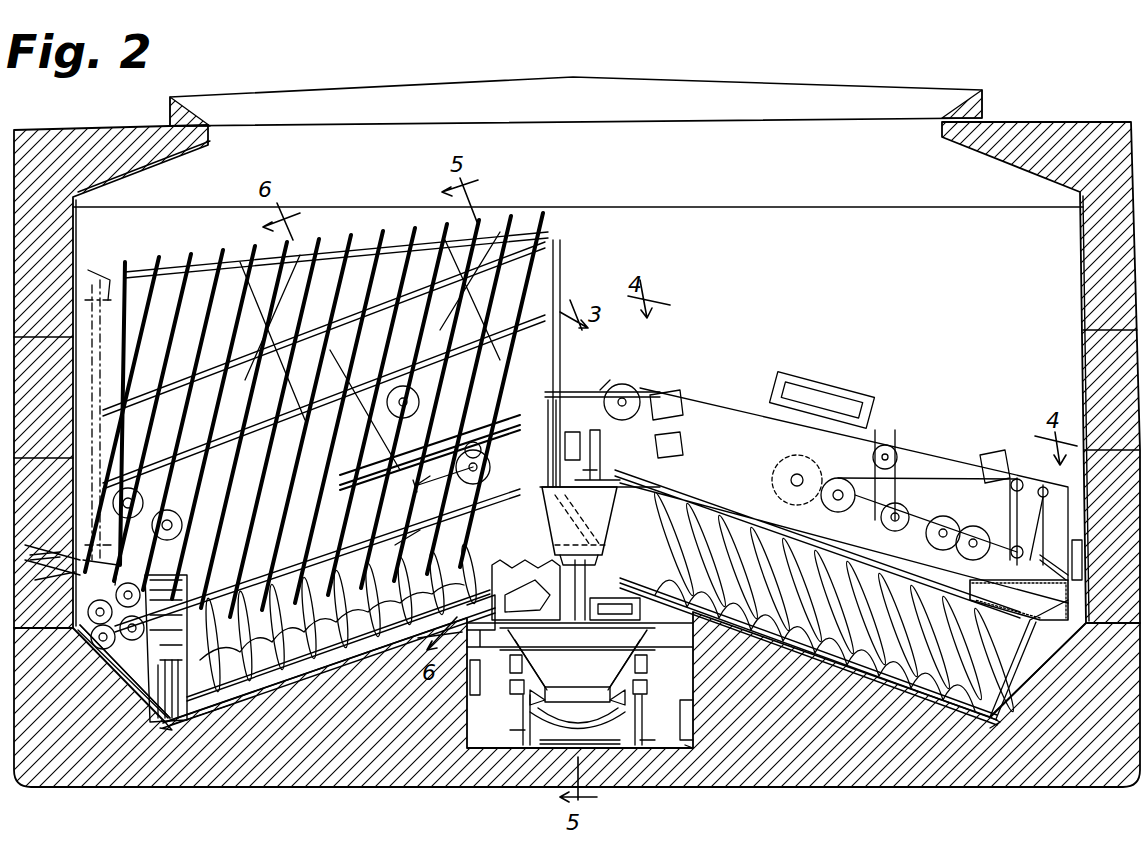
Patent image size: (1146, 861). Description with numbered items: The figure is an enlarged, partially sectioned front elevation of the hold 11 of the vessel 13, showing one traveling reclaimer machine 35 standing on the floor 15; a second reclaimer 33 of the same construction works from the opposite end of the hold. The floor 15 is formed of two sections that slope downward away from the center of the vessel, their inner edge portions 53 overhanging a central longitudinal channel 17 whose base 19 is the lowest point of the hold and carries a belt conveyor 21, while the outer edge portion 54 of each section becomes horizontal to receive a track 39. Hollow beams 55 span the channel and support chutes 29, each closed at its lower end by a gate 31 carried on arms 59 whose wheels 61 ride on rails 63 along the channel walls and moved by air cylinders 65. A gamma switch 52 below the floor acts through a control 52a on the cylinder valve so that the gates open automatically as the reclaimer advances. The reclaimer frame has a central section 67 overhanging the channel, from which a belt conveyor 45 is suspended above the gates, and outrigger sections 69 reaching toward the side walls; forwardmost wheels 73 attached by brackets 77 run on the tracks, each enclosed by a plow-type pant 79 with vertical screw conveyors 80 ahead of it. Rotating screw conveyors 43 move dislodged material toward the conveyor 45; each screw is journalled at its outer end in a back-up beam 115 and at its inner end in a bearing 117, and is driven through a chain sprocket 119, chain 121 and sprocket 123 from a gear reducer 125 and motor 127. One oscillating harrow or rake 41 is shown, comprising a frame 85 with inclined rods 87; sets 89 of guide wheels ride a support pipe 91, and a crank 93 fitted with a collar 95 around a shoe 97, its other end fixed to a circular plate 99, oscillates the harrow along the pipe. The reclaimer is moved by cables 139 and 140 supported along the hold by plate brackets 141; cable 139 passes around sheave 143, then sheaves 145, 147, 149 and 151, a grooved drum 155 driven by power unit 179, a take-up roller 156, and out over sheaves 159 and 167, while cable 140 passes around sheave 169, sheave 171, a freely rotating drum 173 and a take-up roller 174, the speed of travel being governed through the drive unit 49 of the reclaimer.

The hold 11 is at (723, 211).
The vessel 13 is at (1068, 125).
The floor 15 is at (818, 661).
The channel 17 is at (695, 703).
The base of the channel 19 is at (686, 748).
The conveyor 21 is at (605, 745).
The chutes 29 is at (580, 686).
The gate 31 is at (580, 700).
The traveling reclaimer machine 33 is at (586, 583).
The traveling reclaimer machine 35 is at (842, 381).
The tracks 39 is at (172, 728).
The oscillating harrows or rakes 41 is at (562, 247).
The rotating screw conveyors 43 is at (745, 640).
The belt conveyor 45 is at (612, 592).
The drive unit 49 is at (958, 462).
The gamma switches 52 is at (580, 621).
The control 52a is at (470, 688).
The inner edge portions 53 is at (535, 595).
The outer edge portion 54 is at (150, 660).
The hollow beams 55 is at (565, 640).
The arms 59 is at (610, 685).
The wheels 61 is at (648, 690).
The rails 63 is at (648, 725).
The air cylinders 65 is at (648, 664).
The central section 67 is at (560, 400).
The outrigger sections 69 is at (243, 520).
The forwardmost wheels 73 is at (160, 712).
The brackets 77 is at (200, 712).
The plow-type shield or pant 79 is at (188, 585).
The screw conveyors 80 is at (156, 682).
The frame 85 is at (300, 338).
The rods 87 is at (316, 422).
The sets of guide wheels 89 is at (133, 640).
The support pipe 91 is at (75, 640).
The crank 93 is at (440, 484).
The collar 95 is at (410, 540).
The shoe 97 is at (395, 480).
The circular plate 99 is at (475, 442).
The back-up beam 115 is at (1015, 633).
The bearing 117 is at (605, 515).
The chain sprocket 119 is at (598, 560).
The chain 121 is at (592, 472).
The sprocket 123 is at (600, 455).
The gear reducer 125 is at (665, 455).
The motor 127 is at (668, 395).
The cable 139 is at (612, 388).
The cable 140 is at (1076, 580).
The plate brackets 141 is at (72, 578).
The sheave 143 is at (102, 555).
The sheave 145 is at (170, 518).
The sheave 147 is at (143, 500).
The sheave 149 is at (420, 403).
The sheave 151 is at (632, 388).
The grooved drum 155 is at (838, 478).
The take up roller 156 is at (976, 560).
The sheave 159 is at (75, 577).
The sheave 167 is at (75, 560).
The sheave 169 is at (1048, 555).
The sheave 171 is at (892, 450).
The drum 173 is at (908, 508).
The take up roller 174 is at (945, 516).
The power unit 179 is at (795, 455).